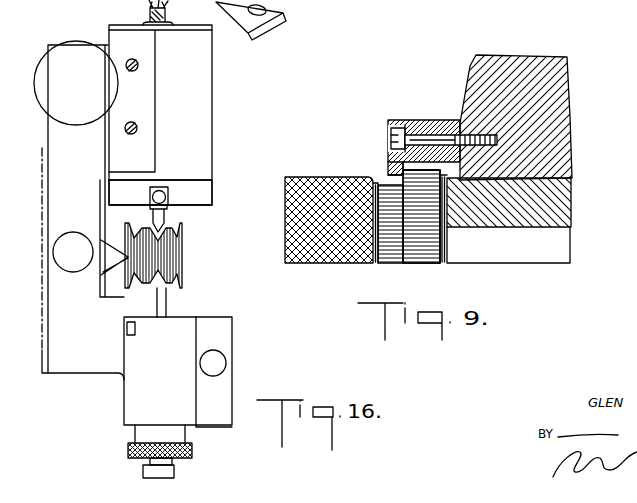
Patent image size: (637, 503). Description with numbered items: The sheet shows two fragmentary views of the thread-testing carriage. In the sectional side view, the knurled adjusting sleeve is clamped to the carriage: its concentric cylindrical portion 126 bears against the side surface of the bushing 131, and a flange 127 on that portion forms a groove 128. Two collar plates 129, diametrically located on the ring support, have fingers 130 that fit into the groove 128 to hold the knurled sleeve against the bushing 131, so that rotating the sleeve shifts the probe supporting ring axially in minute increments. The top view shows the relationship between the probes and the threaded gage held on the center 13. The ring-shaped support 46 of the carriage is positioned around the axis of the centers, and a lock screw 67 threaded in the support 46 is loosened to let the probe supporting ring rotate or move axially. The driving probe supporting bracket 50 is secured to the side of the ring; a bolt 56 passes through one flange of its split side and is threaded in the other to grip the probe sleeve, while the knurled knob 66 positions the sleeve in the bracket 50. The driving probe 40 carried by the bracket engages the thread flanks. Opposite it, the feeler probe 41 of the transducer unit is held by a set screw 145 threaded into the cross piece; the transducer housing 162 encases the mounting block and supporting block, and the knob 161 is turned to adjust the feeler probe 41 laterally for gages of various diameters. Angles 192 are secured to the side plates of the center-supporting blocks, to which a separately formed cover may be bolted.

In FIG. 16, the knob 161 is at (79, 47).
In FIG. 16, the housing 162 is at (245, 75).
In FIG. 16, the angles 192 is at (288, 12).
In FIG. 16, the set screw 145 is at (166, 182).
In FIG. 16, the feeler probe 41 is at (166, 214).
In FIG. 16, the center 13 is at (107, 243).
In FIG. 16, the driving probe 40 is at (168, 298).
In FIG. 16, the lock screw 67 is at (76, 265).
In FIG. 16, the ring-shaped support 46 is at (73, 360).
In FIG. 16, the driving probe supporting bracket 50 is at (133, 407).
In FIG. 16, the bolt 56 is at (222, 362).
In FIG. 16, the knurled knob 66 is at (181, 459).
In FIG. 9, the collar plates 129 is at (423, 121).
In FIG. 9, the fingers 130 is at (388, 162).
In FIG. 9, the concentric cylindrical portion 126 is at (405, 187).
In FIG. 9, the flange 127 is at (415, 255).
In FIG. 9, the groove 128 is at (385, 257).
In FIG. 9, the bushing 131 is at (567, 197).